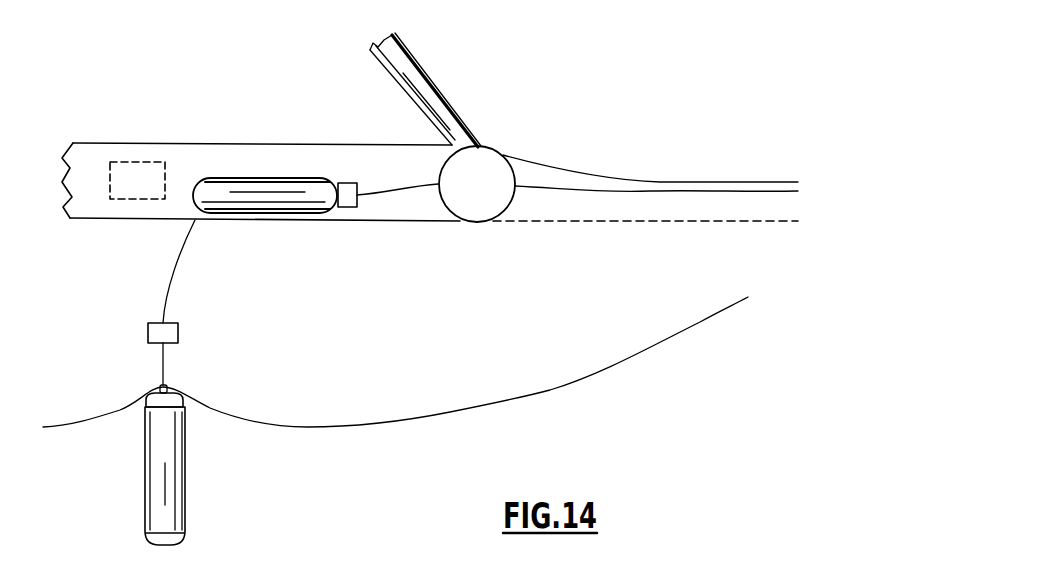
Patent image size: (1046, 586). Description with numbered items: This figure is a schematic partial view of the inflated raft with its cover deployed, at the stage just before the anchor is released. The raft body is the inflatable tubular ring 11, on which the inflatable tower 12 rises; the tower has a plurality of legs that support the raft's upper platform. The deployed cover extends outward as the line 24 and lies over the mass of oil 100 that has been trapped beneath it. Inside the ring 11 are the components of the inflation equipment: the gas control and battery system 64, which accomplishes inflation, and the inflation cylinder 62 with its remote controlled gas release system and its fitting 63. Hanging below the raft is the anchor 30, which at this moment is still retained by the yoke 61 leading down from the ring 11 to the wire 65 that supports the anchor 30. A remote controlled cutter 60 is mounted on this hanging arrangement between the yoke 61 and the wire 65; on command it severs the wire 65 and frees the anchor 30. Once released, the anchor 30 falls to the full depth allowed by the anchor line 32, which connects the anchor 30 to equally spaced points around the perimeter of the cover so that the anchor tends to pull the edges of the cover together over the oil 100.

The inflatable tubular ring 11 is at (488, 148).
The inflatable tower 12 is at (430, 80).
The wing line 24 is at (657, 182).
The anchor 30 is at (185, 503).
The anchor line 32 is at (58, 428).
The remote controlled cutter 60 is at (178, 335).
The yoke 61 is at (175, 262).
The inflation cylinder 62 is at (263, 178).
The coupler 63 is at (342, 183).
The gas control and battery system 64 is at (127, 162).
The wire 65 is at (165, 370).
The mass of oil 100 is at (661, 218).